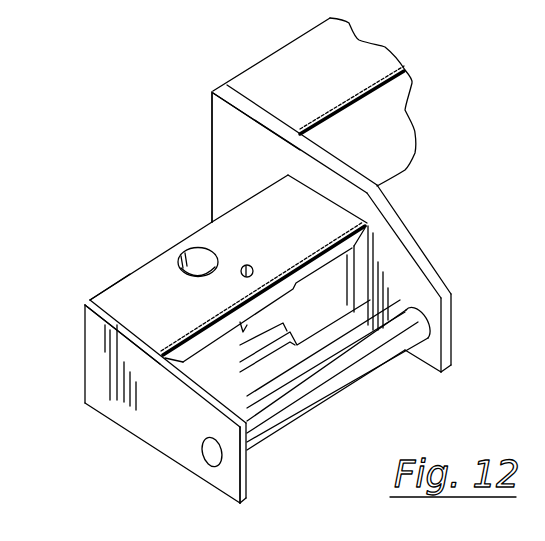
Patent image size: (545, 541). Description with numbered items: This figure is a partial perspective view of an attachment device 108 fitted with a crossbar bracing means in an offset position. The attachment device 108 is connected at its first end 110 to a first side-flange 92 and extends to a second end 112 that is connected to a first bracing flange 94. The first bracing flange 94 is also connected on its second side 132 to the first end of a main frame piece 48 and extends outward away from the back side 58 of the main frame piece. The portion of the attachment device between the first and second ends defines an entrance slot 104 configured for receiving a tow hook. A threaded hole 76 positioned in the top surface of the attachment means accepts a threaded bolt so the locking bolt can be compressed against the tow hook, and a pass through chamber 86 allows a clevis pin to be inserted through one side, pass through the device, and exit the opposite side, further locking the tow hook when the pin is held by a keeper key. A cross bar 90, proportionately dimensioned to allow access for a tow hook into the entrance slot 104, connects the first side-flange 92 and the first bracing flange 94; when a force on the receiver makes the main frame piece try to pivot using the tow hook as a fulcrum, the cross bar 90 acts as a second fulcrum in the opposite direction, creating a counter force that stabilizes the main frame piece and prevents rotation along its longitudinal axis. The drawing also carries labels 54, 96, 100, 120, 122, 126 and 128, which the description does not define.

The main frame piece 48 is at (245, 51).
The frame rail top surface 54 is at (372, 64).
The back side of the main frame piece 58 is at (383, 118).
The threaded hole 76 is at (190, 247).
The pass through chamber 86 is at (250, 265).
The cross bar 90 is at (340, 373).
The first side-flange 92 is at (100, 382).
The first bracing flange 94 is at (440, 282).
The base top surface 96 is at (184, 320).
The slide bar 100 is at (285, 377).
The entrance slot 104 is at (325, 292).
The attachment device 108 is at (126, 259).
The first end of the attachment device 110 is at (107, 297).
The second end of the attachment device 112 is at (288, 176).
The vertical mounting plate 120 is at (230, 118).
The slanted plate edge 122 is at (412, 231).
The front plate upper edge 126 is at (95, 340).
The front plate side edge 128 is at (243, 465).
The second side of the first bracing flange 132 is at (237, 143).